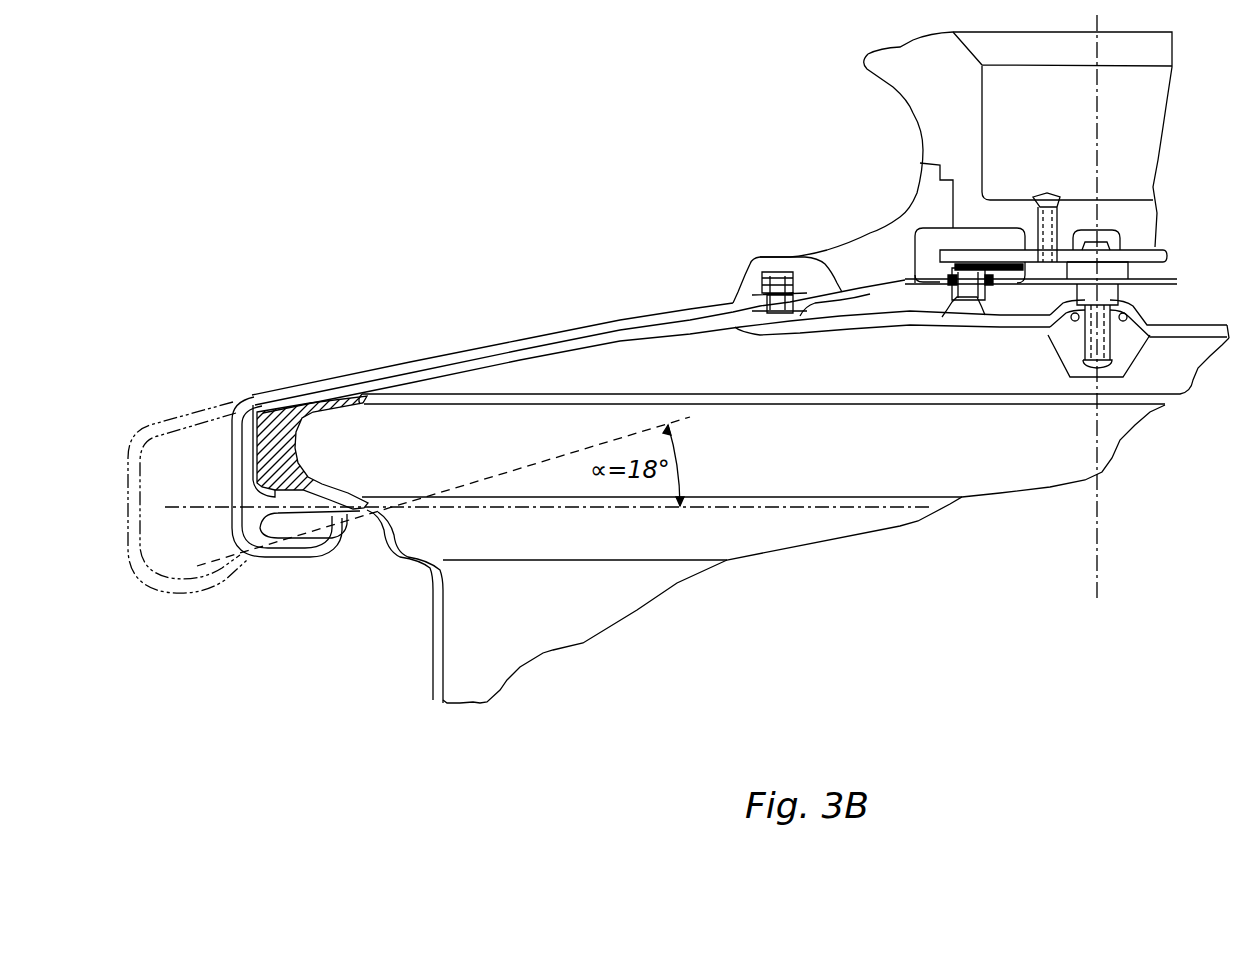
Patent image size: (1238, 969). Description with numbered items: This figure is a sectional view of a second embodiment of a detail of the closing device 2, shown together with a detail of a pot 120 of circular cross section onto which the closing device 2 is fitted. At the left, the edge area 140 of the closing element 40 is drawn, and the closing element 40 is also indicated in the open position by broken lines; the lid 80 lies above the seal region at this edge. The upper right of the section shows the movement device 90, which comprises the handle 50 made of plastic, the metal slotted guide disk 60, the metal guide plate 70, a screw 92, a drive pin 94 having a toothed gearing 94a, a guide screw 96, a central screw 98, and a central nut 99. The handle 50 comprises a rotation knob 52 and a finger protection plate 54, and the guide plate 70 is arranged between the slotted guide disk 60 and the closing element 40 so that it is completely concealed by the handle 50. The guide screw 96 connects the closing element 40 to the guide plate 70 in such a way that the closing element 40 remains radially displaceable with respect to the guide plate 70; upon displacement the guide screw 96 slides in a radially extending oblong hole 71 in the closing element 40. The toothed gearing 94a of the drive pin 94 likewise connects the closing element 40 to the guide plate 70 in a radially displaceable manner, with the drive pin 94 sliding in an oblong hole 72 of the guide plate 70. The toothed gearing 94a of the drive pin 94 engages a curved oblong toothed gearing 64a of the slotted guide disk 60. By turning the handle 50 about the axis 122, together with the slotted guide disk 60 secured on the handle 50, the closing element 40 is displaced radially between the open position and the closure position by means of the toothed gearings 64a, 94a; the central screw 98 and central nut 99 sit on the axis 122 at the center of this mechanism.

The closing device 2 is at (610, 320).
The closing element 40 is at (528, 344).
The handle 50 is at (940, 137).
The rotation knob 52 is at (883, 65).
The finger protection plate 54 is at (858, 252).
The slotted guide disk 60 is at (958, 262).
The curved oblong toothed gearing 64a is at (997, 257).
The guide plate 70 is at (877, 290).
The oblong hole 71 is at (826, 316).
The oblong hole 72 is at (1004, 290).
The lid 80 is at (868, 324).
The movement device 90 is at (860, 187).
The screw 92 is at (1057, 200).
The drive pin 94 is at (979, 298).
The toothed gearing 94a is at (957, 297).
The guide screw 96 is at (778, 318).
The central screw 98 is at (1110, 292).
The central nut 99 is at (1065, 342).
The pot 120 is at (433, 660).
The axis 122 is at (1098, 562).
The edge area 140 is at (263, 393).